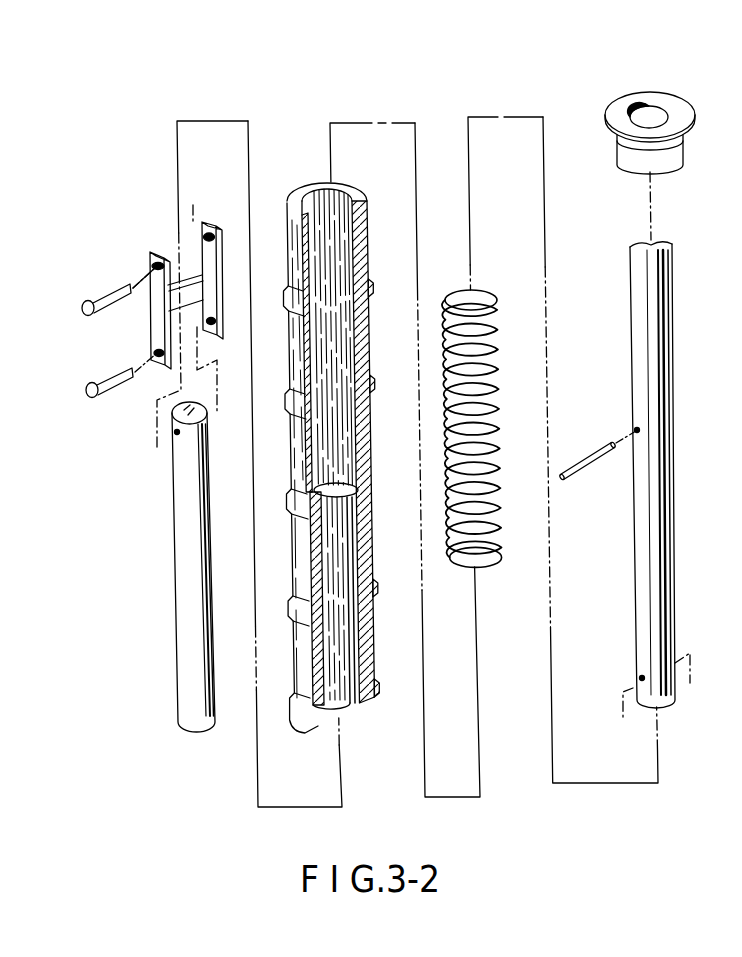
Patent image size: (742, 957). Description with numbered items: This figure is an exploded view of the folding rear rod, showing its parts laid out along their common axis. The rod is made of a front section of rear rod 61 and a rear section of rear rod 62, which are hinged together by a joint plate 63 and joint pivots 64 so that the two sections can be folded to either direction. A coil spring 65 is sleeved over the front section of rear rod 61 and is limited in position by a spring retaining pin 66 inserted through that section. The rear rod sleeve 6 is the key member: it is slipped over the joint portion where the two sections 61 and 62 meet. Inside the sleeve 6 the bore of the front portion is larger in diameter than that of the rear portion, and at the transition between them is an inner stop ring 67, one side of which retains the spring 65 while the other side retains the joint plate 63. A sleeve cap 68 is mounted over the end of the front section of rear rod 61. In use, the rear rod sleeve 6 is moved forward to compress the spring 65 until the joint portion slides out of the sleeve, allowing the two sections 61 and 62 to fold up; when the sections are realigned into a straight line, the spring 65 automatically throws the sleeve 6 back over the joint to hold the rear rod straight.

The rear rod sleeve 6 is at (366, 310).
The front section of rear rod 61 is at (674, 358).
The rear section of rear rod 62 is at (188, 551).
The joint plate 63 is at (208, 222).
The joint pivot 64 is at (87, 316).
The spring 65 is at (496, 478).
The spring retaining pin 66 is at (587, 467).
The inner stop ring 67 is at (352, 490).
The sleeve cap 68 is at (694, 126).